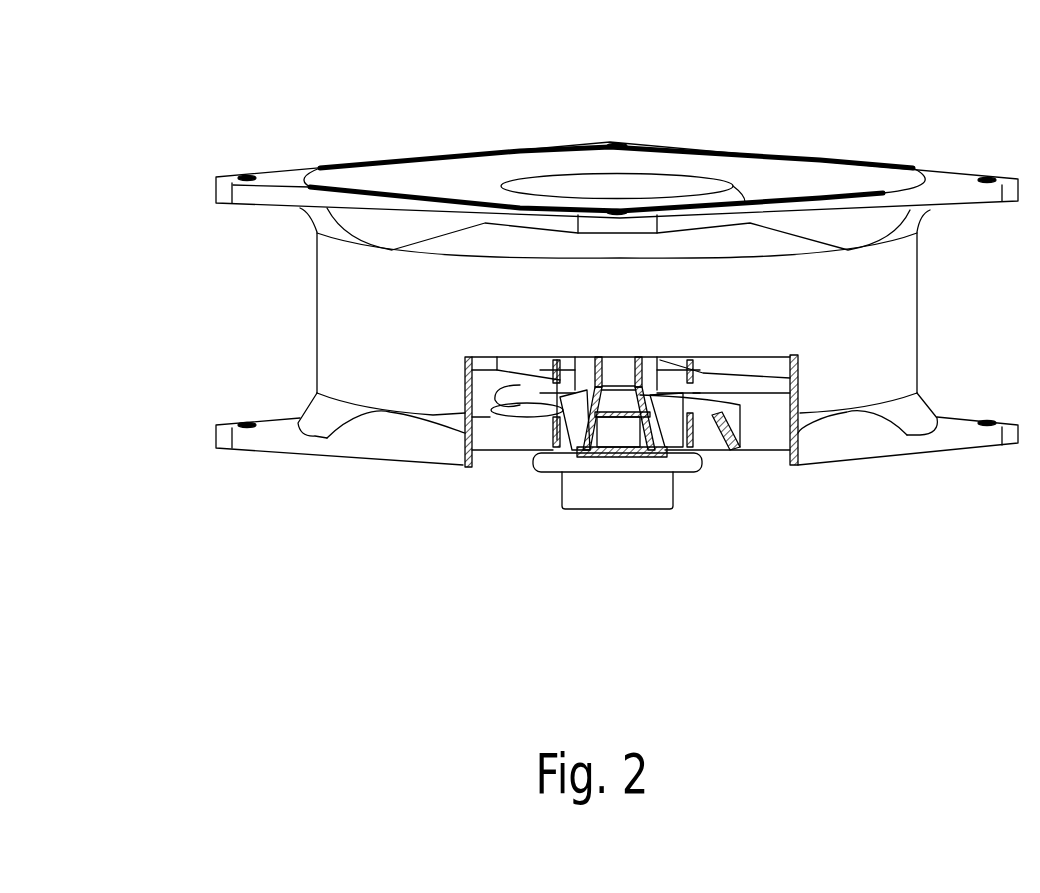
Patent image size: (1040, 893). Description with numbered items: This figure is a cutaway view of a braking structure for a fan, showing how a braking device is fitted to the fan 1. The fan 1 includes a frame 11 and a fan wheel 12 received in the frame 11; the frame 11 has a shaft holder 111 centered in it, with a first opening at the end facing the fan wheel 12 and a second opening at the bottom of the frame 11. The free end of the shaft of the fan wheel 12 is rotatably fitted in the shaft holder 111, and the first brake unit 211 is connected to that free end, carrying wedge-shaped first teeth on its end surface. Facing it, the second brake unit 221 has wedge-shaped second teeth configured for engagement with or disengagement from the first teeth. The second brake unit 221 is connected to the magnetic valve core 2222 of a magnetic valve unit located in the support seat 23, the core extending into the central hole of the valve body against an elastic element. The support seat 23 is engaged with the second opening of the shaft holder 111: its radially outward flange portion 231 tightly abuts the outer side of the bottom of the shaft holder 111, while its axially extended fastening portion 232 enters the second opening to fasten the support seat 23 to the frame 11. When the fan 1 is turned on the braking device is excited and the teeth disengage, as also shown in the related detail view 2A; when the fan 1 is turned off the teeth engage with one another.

The fan 1 is at (840, 130).
The frame 11 is at (280, 177).
The fan wheel 12 is at (592, 185).
The shaft holder 111 is at (700, 445).
The first brake unit 211 is at (640, 397).
The second brake unit 221 is at (670, 440).
The magnetic valve core 2222 is at (632, 455).
The support seat 23 is at (557, 499).
The flange portion 231 is at (548, 460).
The fastening portion 232 is at (583, 455).
The impeller 2A is at (565, 458).